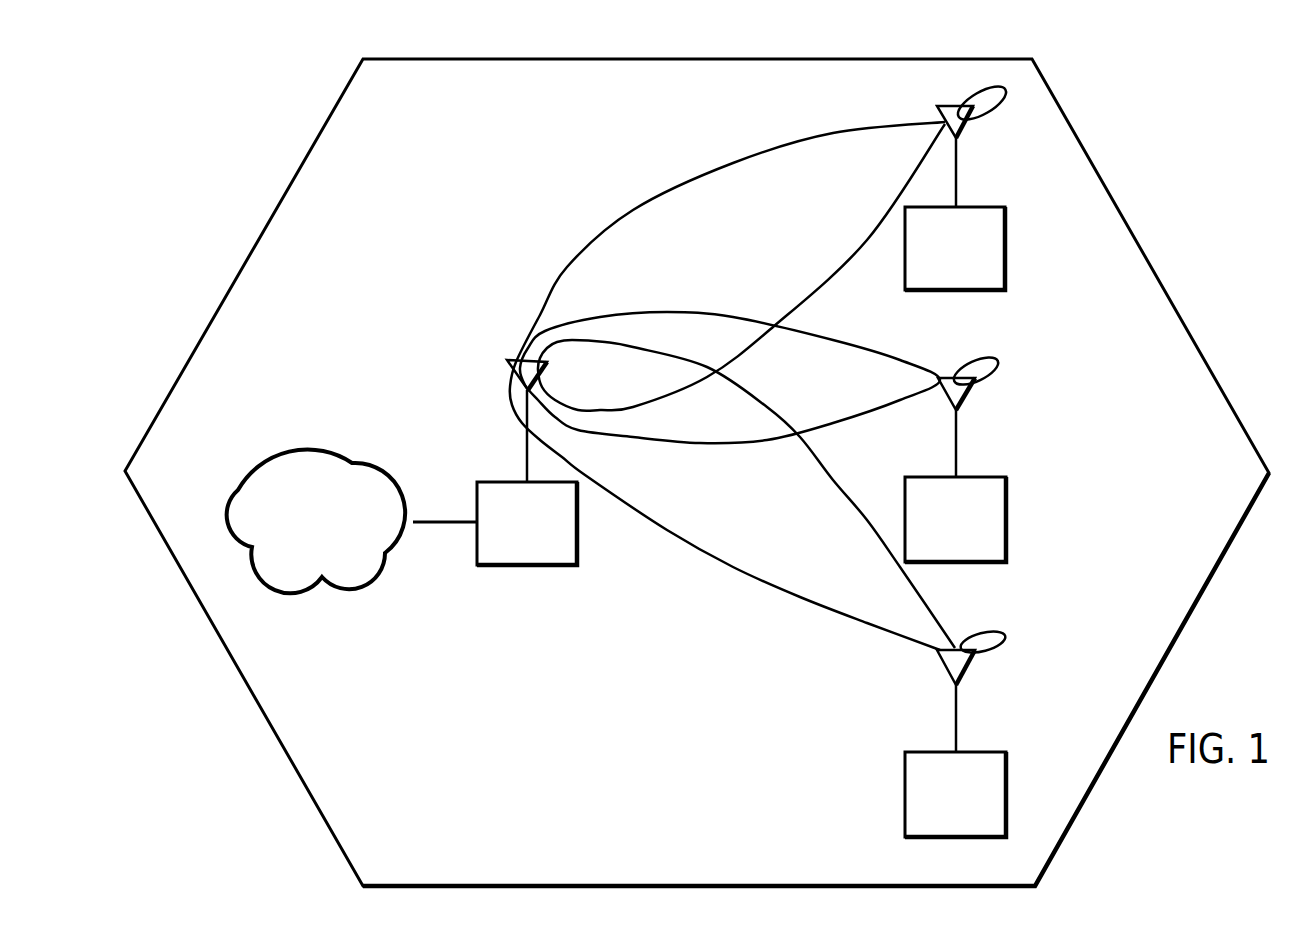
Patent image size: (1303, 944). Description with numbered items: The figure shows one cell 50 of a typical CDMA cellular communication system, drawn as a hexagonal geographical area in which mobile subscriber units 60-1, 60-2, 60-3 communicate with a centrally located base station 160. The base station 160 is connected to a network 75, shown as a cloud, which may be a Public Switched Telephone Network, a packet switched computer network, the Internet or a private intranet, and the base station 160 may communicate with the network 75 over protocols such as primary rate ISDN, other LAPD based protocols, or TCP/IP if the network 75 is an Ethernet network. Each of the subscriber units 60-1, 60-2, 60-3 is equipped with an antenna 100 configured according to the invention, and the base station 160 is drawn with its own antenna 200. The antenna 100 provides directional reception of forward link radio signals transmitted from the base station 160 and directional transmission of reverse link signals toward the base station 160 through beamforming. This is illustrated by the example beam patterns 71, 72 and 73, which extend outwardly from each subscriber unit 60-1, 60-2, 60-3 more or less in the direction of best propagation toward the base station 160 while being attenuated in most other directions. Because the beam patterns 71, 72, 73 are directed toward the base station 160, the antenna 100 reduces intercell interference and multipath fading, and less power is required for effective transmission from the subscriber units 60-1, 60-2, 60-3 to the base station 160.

The cell 50 is at (541, 748).
The network 75 is at (322, 530).
The base station 160 is at (508, 548).
The base station antenna 200 is at (527, 441).
The antenna 100 is at (957, 178).
The mobile subscriber unit 60-1 is at (980, 257).
The mobile subscriber unit 60-2 is at (980, 537).
The mobile subscriber unit 60-3 is at (980, 813).
The beam pattern 71 is at (670, 197).
The beam pattern 72 is at (873, 357).
The beam pattern 73 is at (942, 618).